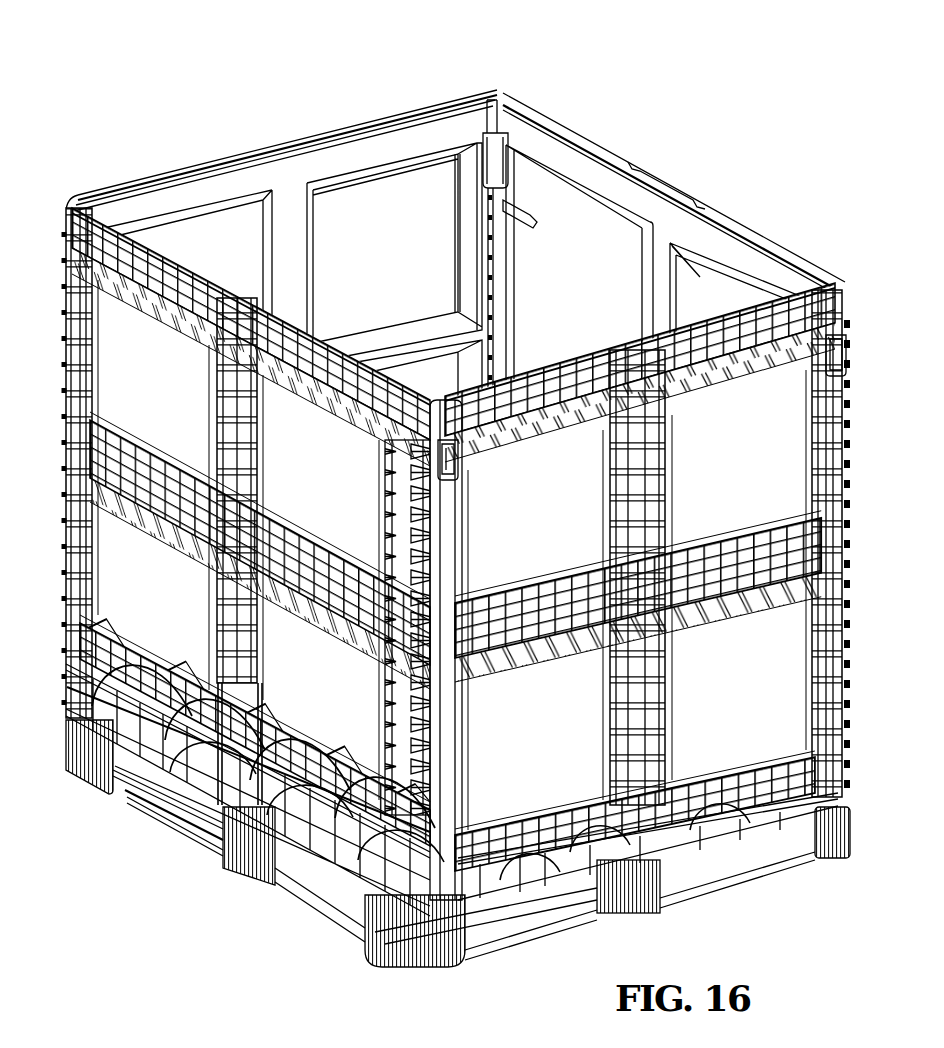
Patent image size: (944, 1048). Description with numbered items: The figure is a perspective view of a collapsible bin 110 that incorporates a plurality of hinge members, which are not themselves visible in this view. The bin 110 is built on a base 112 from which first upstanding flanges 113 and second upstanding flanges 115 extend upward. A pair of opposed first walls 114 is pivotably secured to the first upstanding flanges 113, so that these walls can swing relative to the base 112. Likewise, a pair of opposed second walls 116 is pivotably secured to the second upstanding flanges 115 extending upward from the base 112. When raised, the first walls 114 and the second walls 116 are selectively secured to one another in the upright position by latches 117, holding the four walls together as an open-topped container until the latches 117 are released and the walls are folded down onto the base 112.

The collapsible bin 110 is at (690, 75).
The base 112 is at (850, 826).
The first upstanding flanges 113 is at (800, 800).
The first walls 114 is at (300, 140).
The second upstanding flanges 115 is at (90, 672).
The second walls 116 is at (203, 281).
The latches 117 is at (456, 468).